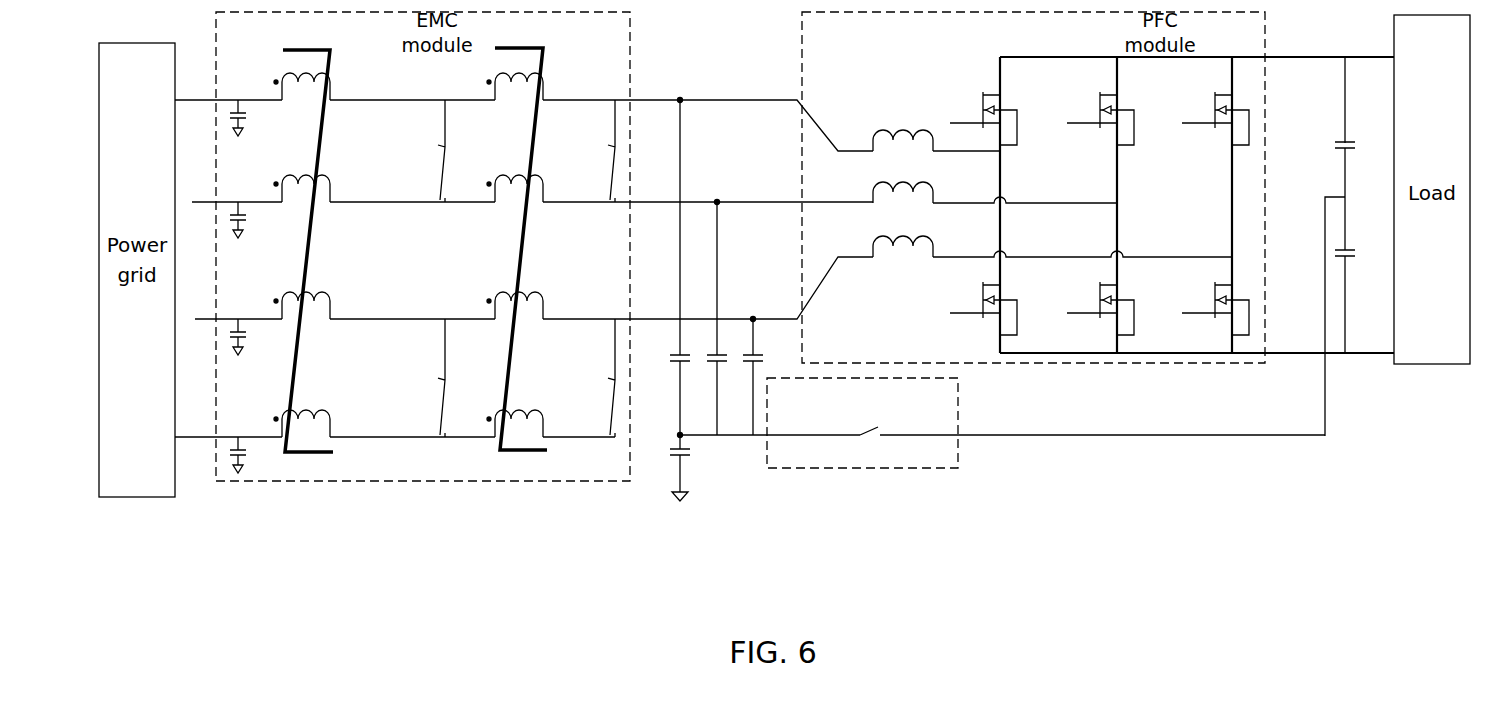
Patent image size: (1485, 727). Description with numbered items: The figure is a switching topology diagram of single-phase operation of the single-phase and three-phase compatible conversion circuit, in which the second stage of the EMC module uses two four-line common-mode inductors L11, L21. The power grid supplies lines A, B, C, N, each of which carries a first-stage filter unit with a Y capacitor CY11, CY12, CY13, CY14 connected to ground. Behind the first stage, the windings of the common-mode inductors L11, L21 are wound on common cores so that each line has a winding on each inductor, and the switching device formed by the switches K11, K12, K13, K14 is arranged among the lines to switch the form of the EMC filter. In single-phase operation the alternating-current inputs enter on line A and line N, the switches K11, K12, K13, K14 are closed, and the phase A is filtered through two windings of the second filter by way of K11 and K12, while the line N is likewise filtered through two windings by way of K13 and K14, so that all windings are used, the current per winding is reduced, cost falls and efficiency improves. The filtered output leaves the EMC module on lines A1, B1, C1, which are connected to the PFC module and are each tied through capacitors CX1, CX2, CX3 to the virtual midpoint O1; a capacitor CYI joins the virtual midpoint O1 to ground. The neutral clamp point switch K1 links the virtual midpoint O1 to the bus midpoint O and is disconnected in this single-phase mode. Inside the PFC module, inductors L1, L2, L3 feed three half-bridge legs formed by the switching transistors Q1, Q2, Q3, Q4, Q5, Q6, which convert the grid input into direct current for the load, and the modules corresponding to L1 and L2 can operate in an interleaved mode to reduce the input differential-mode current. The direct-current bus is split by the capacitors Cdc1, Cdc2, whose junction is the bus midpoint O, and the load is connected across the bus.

The line A is at (524, 111).
The line B is at (532, 188).
The line C is at (534, 288).
The line N is at (395, 423).
The Y capacitor CY11 is at (213, 119).
The Y capacitor CY12 is at (213, 222).
The Y capacitor CY13 is at (213, 338).
The Y capacitor CY14 is at (213, 456).
The four-line common-mode inductor L11 is at (303, 266).
The four-line common-mode inductor L21 is at (517, 265).
The switch K11 is at (421, 151).
The switch K12 is at (591, 151).
The switch K13 is at (421, 378).
The switch K14 is at (590, 378).
The line A1 is at (703, 87).
The line B1 is at (731, 190).
The line C1 is at (760, 306).
The capacitor CX1 is at (665, 267).
The capacitor CX2 is at (711, 318).
The capacitor CX3 is at (764, 377).
The capacitor CY1 CYI is at (692, 467).
The virtual midpoint O1 is at (770, 451).
The neutral clamp point switch K1 is at (1046, 423).
The inductor L1 is at (936, 120).
The inductor L2 is at (995, 177).
The inductor L3 is at (1052, 231).
The switching transistor Q1 is at (983, 109).
The switching transistor Q2 is at (983, 299).
The switching transistor Q3 is at (1100, 109).
The switching transistor Q4 is at (1100, 299).
The switching transistor Q5 is at (1215, 109).
The switching transistor Q6 is at (1215, 299).
The DC bus capacitor Cdc1 is at (1359, 127).
The DC bus capacitor Cdc2 is at (1359, 275).
The bus midpoint O is at (1344, 316).